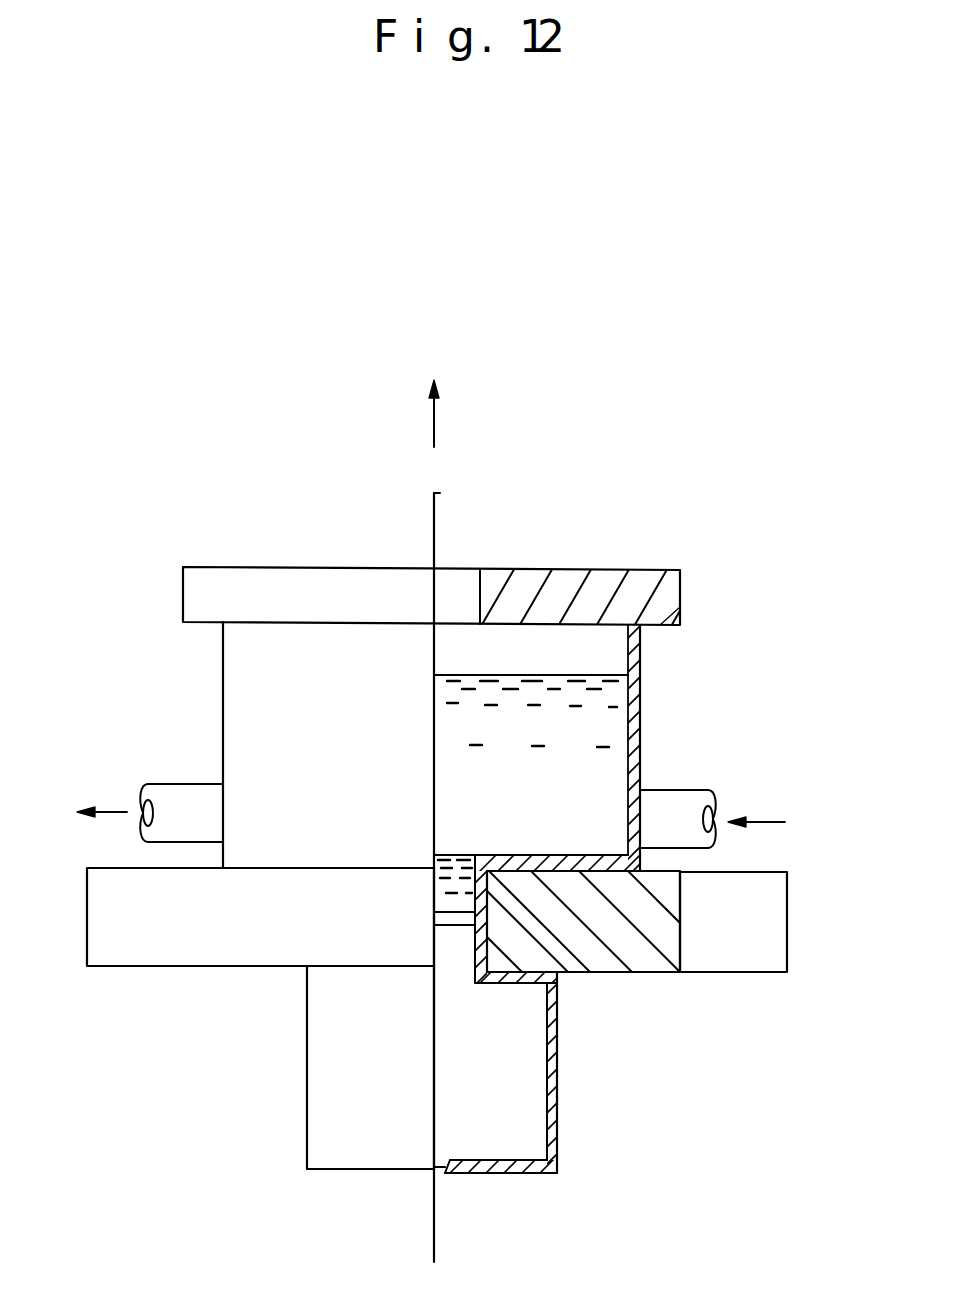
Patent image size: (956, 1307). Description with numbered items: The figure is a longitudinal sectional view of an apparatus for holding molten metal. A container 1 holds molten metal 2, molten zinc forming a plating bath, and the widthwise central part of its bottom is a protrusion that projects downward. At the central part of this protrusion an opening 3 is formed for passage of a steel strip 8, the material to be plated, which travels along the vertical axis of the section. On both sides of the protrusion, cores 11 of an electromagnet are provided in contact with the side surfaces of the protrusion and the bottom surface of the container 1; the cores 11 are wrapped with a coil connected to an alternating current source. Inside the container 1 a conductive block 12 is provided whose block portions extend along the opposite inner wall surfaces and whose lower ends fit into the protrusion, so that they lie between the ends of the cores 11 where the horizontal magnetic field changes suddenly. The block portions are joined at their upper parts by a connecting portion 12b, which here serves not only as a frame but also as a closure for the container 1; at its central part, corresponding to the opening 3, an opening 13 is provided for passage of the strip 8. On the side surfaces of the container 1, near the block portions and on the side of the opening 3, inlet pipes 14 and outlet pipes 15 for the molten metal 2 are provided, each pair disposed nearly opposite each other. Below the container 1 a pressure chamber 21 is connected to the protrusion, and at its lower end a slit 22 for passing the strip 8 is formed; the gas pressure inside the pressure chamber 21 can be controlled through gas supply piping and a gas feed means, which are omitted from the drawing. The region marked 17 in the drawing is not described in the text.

The container 1 is at (237, 675).
The molten metal 2 is at (607, 702).
The opening 3 is at (457, 918).
The steel strip 8 is at (437, 500).
The cores 11 is at (205, 952).
The conductive block 12 is at (308, 558).
The connecting portion 12b is at (645, 578).
The opening 13 is at (478, 594).
The inlet pipes 14 is at (700, 790).
The outlet pipes 15 is at (170, 790).
The liquid passage 17 is at (457, 855).
The pressure chamber 21 is at (318, 1090).
The slit 22 is at (440, 1167).